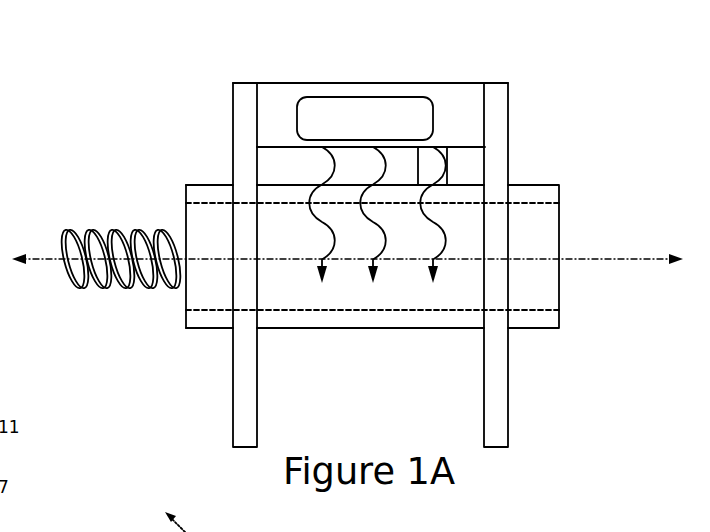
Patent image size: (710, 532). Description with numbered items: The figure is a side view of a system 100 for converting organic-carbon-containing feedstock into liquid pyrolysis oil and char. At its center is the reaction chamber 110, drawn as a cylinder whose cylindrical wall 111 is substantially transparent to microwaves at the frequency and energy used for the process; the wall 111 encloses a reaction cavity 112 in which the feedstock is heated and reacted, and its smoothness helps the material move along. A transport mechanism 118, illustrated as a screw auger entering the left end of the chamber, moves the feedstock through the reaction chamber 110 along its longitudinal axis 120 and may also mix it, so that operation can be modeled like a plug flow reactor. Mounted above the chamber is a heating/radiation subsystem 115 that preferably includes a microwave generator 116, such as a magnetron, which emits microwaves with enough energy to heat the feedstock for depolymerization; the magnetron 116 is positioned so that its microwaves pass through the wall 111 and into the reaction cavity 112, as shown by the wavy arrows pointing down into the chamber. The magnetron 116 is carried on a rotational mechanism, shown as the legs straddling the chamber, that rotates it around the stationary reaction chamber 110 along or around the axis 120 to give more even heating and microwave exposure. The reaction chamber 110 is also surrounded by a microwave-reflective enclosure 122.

The system 100 is at (338, 42).
The reaction chamber 110 is at (202, 168).
The cylindrical wall 111 is at (522, 185).
The reaction cavity 112 is at (540, 255).
The heating/radiation subsystem 115 is at (432, 90).
The microwave generator 116 is at (320, 97).
The transport mechanism 118 is at (111, 228).
The longitudinal axis 120 is at (578, 260).
The microwave-reflective enclosure 122 is at (444, 148).